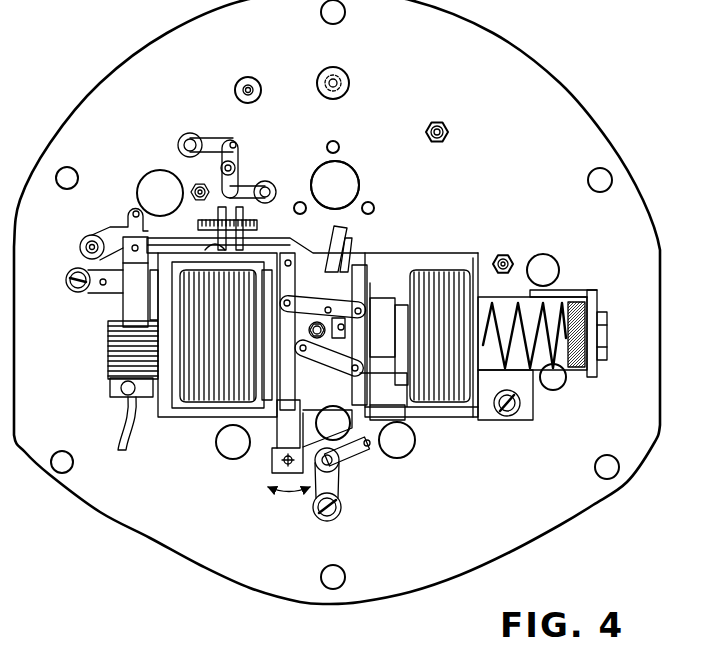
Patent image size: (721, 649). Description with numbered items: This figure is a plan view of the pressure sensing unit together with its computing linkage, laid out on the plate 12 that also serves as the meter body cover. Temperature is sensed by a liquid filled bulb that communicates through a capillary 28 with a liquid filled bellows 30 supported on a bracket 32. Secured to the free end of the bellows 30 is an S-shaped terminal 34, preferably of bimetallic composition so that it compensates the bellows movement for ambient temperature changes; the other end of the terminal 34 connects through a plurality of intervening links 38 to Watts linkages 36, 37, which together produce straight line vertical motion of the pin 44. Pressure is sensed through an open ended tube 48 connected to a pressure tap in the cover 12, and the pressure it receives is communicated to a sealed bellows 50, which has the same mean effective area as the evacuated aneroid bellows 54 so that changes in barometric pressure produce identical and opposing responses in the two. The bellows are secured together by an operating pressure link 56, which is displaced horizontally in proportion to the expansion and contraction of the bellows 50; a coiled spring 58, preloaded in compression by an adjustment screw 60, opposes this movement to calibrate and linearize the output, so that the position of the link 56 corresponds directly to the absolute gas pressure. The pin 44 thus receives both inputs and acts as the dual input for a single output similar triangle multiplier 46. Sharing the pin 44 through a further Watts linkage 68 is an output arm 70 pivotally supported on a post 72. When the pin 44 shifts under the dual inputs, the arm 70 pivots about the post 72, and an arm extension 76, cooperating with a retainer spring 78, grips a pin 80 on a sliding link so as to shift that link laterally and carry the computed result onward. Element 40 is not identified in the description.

The plate 12 is at (525, 68).
The capillary 28 is at (120, 431).
The liquid filled bellows 30 is at (120, 352).
The bracket 32 is at (118, 398).
The S-shaped terminal 34 is at (140, 296).
The Watts linkage 36 is at (249, 166).
The Watts linkage 37 is at (349, 480).
The intervening links 38 is at (121, 218).
The rack 40 is at (275, 248).
The pin 44 is at (366, 262).
The similar triangle multiplier 46 is at (361, 243).
The open ended tube 48 is at (400, 412).
The sealed bellows 50 is at (432, 272).
The aneroid bellows 54 is at (212, 372).
The operating pressure link 56 is at (446, 414).
The coiled spring 58 is at (513, 366).
The adjustment screw 60 is at (579, 313).
The Watts linkage 68 is at (304, 376).
The output arm 70 is at (350, 460).
The post 72 is at (270, 468).
The arm extension 76 is at (328, 245).
The retainer spring 78 is at (353, 233).
The pin 80 is at (332, 238).